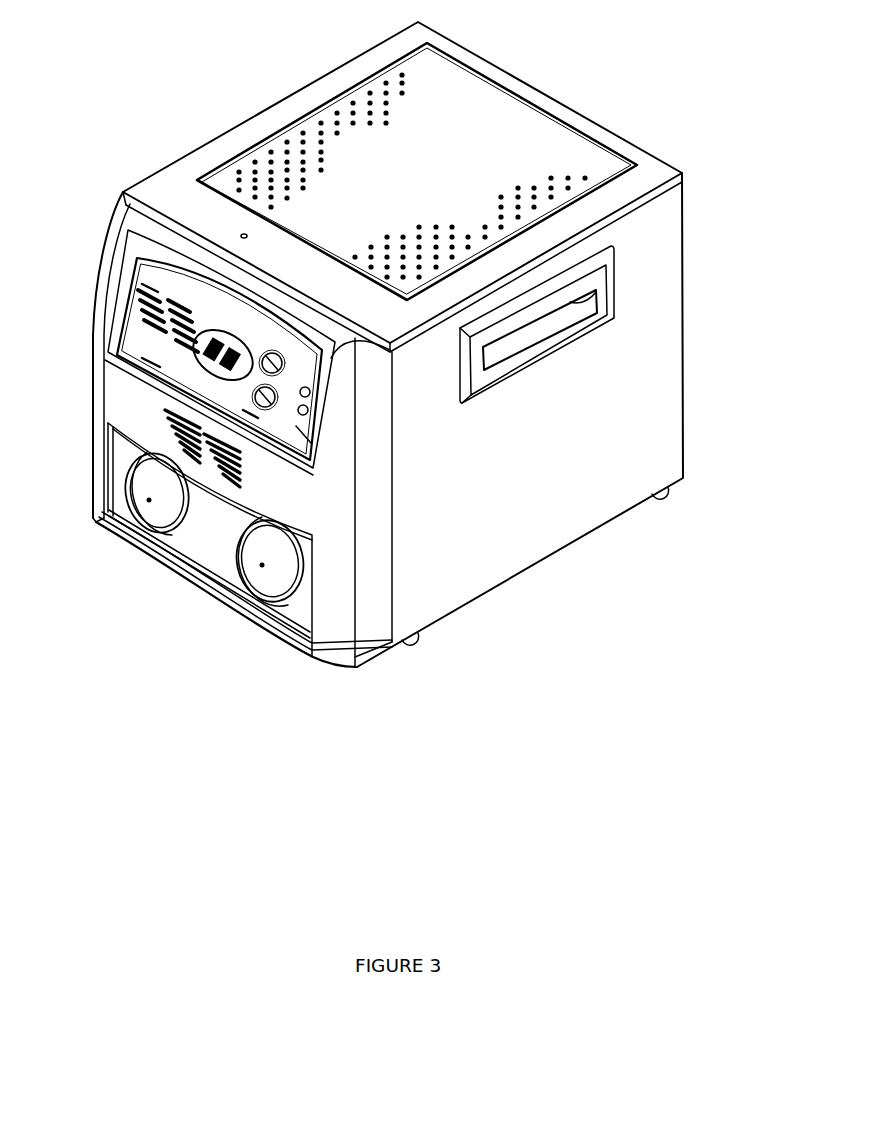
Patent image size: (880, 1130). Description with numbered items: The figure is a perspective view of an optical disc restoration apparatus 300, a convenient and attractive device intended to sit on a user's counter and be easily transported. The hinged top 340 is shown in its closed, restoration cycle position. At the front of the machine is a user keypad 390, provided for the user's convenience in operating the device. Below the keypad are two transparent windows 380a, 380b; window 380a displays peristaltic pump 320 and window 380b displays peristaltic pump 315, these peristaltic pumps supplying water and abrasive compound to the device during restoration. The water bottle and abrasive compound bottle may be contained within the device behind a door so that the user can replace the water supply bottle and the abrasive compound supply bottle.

The blood processing device 300 is at (603, 816).
The hinged top 340 is at (443, 117).
The user keypad 390 is at (313, 472).
The peristaltic pump 320 is at (172, 510).
The peristaltic pump 315 is at (277, 577).
The window 380b is at (132, 493).
The window 380a is at (393, 624).